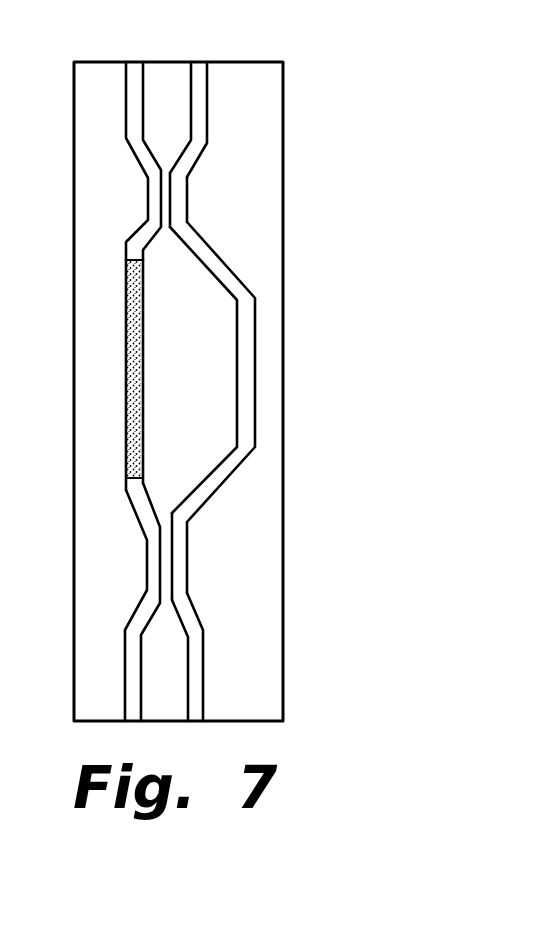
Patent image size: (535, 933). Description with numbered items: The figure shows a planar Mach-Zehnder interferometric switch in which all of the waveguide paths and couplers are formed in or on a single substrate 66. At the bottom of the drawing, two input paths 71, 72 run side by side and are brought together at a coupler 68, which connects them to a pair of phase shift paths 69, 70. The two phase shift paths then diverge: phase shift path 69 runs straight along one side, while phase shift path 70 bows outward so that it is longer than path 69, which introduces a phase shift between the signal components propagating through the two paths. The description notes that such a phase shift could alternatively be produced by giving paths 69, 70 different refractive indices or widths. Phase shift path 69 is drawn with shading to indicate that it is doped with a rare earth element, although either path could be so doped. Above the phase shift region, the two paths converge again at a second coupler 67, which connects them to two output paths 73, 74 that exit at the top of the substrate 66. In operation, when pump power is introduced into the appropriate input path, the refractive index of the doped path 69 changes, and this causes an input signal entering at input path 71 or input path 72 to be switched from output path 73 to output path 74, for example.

The substrate 66 is at (103, 70).
The output path 73 is at (132, 117).
The output path 74 is at (199, 111).
The coupler 67 is at (188, 198).
The phase shift path 69 is at (143, 316).
The phase shift path 70 is at (238, 374).
The coupler 68 is at (187, 563).
The input path 71 is at (130, 677).
The input path 72 is at (193, 667).